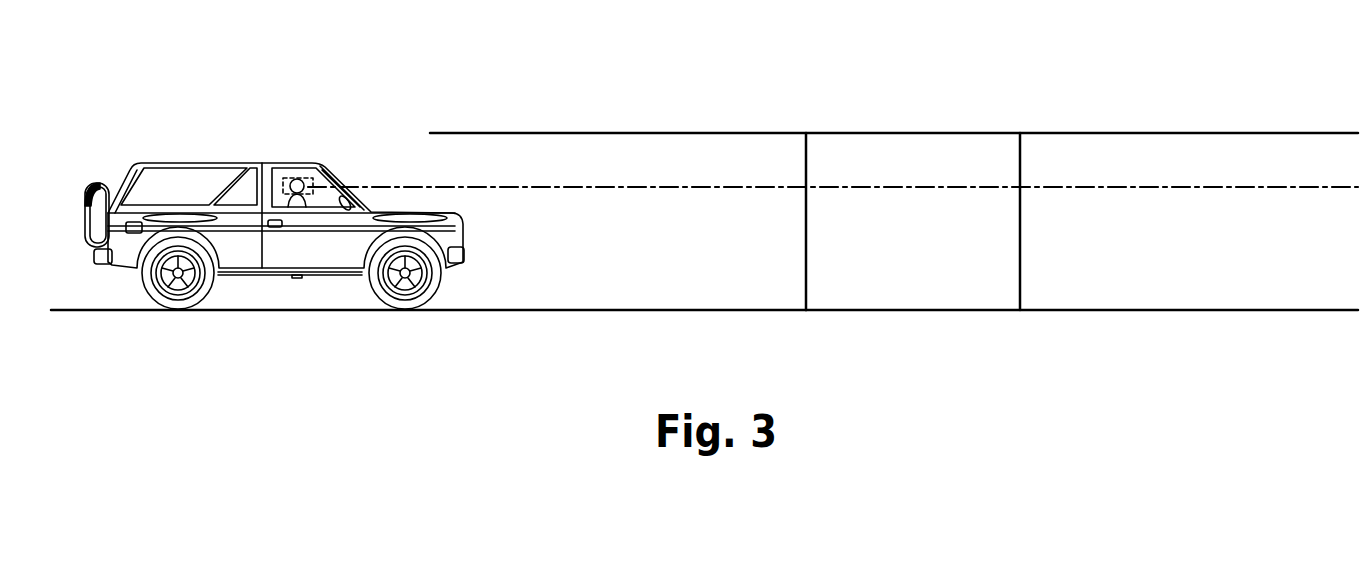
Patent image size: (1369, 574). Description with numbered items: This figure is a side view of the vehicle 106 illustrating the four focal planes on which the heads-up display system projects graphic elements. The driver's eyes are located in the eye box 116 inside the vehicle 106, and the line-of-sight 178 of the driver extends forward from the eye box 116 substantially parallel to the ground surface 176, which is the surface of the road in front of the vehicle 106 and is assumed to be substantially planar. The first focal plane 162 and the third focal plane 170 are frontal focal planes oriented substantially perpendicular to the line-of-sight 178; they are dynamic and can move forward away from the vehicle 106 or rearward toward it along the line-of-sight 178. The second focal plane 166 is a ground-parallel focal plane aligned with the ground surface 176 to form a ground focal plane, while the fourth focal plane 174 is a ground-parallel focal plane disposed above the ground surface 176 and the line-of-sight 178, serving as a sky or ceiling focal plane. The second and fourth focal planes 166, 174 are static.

The vehicle 106 is at (115, 153).
The eye box 116 is at (293, 178).
The first focal plane 162 is at (806, 262).
The second focal plane 166 is at (523, 311).
The third focal plane 170 is at (1020, 262).
The fourth focal plane 174 is at (1112, 133).
The ground surface 176 is at (1138, 311).
The line-of-sight 178 is at (407, 187).